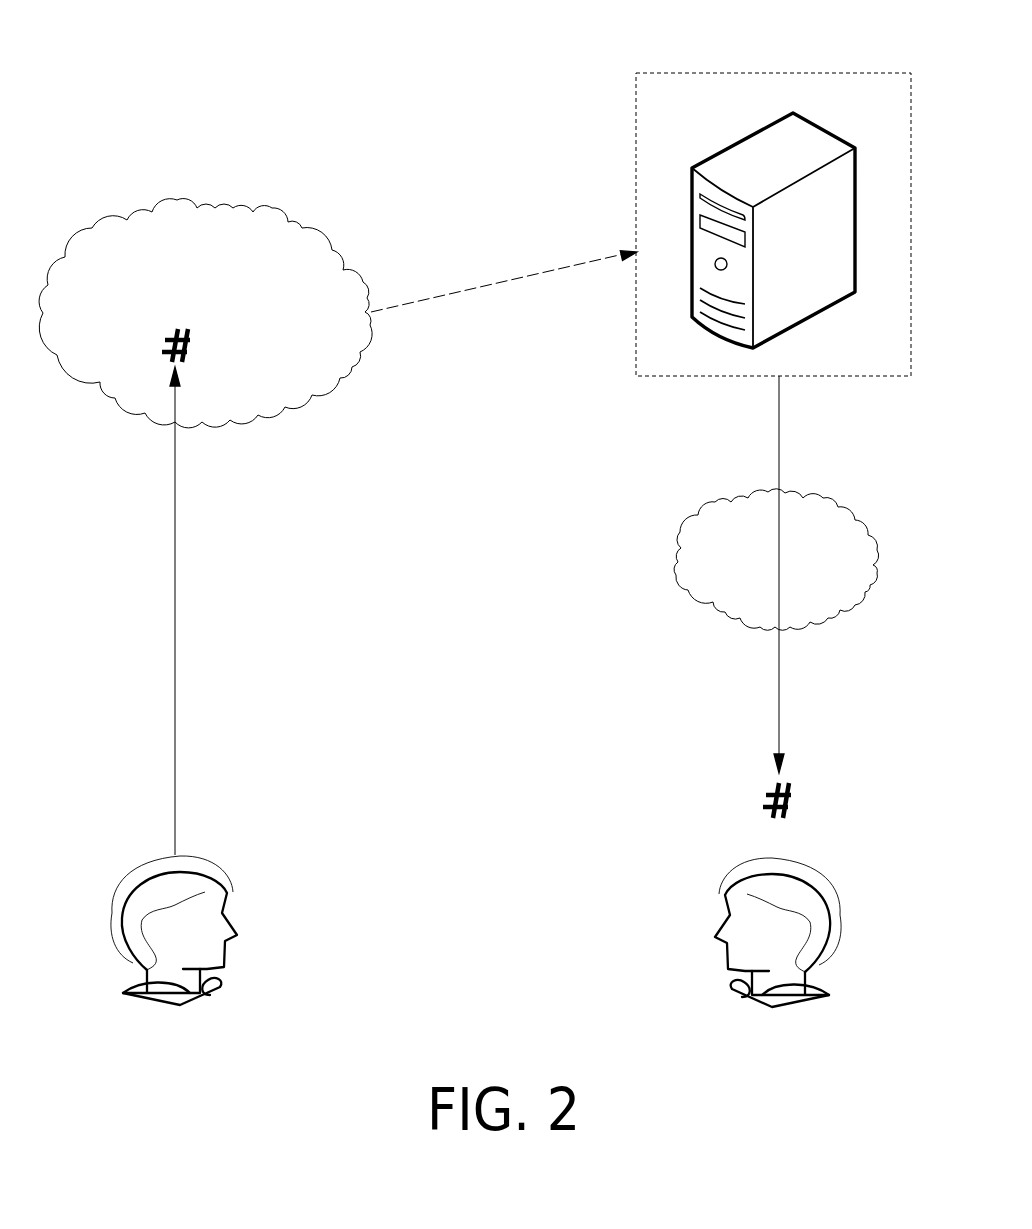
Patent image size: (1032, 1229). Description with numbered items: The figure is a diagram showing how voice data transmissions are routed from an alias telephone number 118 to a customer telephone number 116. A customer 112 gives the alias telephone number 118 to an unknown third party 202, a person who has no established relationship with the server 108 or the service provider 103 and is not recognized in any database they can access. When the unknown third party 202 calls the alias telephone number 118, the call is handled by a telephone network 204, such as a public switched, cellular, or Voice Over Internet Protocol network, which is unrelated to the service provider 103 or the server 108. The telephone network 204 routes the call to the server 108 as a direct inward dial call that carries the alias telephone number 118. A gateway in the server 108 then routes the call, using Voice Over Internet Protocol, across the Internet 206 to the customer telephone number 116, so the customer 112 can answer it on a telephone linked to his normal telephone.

The service provider 103 is at (677, 72).
The server 108 is at (857, 184).
The telephone network 204 is at (272, 208).
The Internet 206 is at (676, 561).
The alias telephone number 118 is at (163, 347).
The customer telephone number 116 is at (762, 800).
The unknown third party 202 is at (242, 937).
The customer 112 is at (715, 937).